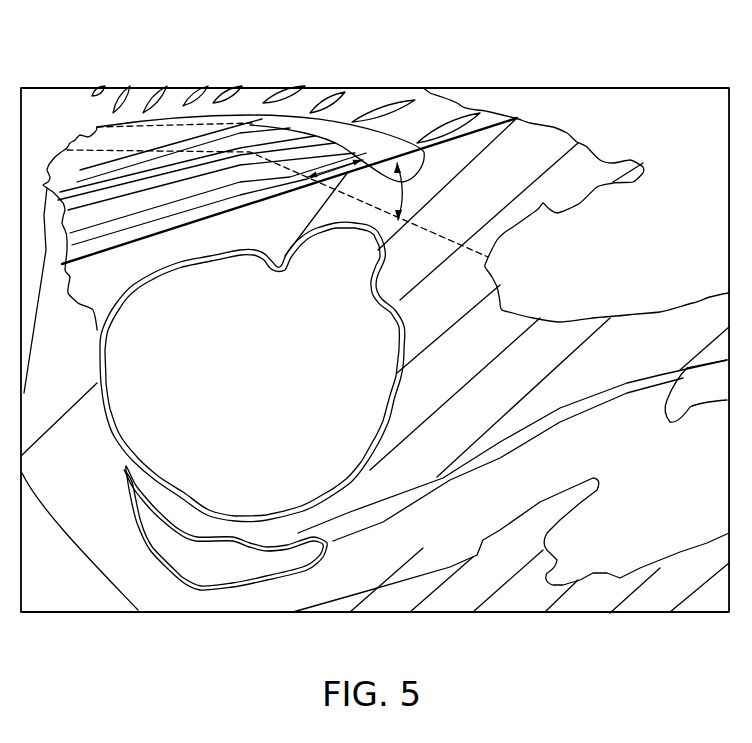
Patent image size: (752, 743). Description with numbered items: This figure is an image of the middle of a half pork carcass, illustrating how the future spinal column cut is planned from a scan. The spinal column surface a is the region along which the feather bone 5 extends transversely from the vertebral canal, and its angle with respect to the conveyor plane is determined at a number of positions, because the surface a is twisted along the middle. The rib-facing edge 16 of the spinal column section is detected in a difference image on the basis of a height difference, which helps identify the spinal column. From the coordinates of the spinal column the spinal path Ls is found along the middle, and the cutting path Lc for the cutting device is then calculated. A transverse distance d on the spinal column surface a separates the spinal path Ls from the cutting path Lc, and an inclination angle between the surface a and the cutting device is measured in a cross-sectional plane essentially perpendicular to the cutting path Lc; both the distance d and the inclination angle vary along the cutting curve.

The feather bone 5 is at (77, 173).
The rib-facing edge 16 is at (462, 106).
The cutting path Lc is at (88, 148).
The spinal path Ls is at (172, 123).
The transverse distance d is at (336, 170).
The spinal column surface a is at (172, 258).